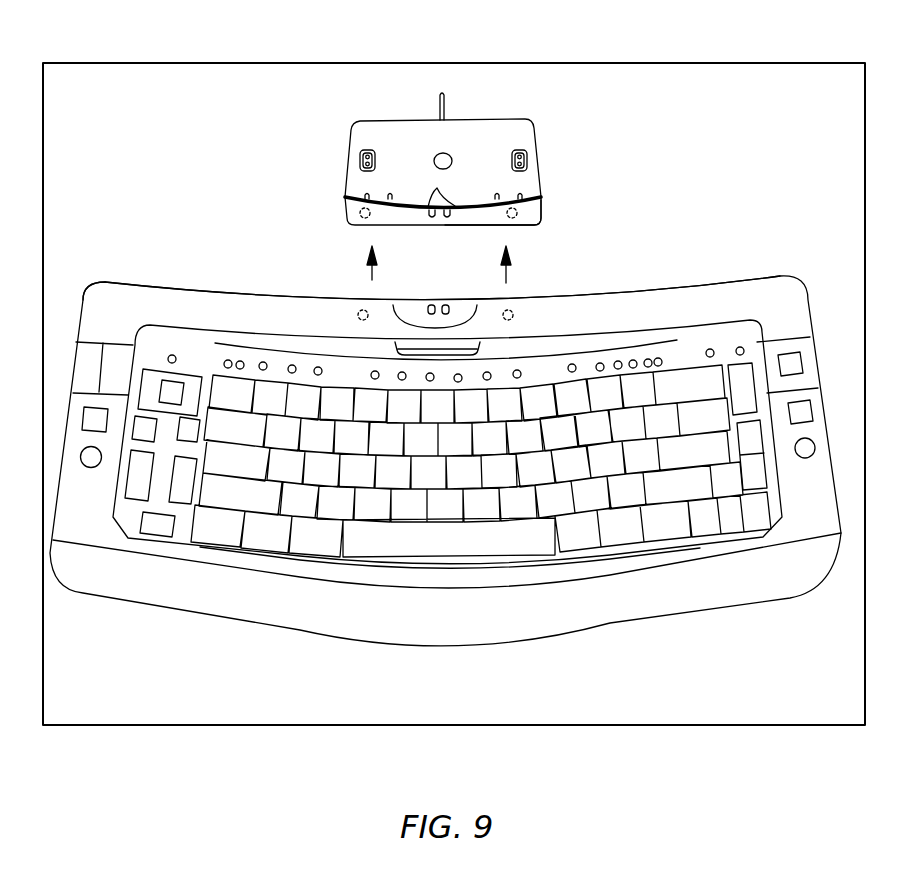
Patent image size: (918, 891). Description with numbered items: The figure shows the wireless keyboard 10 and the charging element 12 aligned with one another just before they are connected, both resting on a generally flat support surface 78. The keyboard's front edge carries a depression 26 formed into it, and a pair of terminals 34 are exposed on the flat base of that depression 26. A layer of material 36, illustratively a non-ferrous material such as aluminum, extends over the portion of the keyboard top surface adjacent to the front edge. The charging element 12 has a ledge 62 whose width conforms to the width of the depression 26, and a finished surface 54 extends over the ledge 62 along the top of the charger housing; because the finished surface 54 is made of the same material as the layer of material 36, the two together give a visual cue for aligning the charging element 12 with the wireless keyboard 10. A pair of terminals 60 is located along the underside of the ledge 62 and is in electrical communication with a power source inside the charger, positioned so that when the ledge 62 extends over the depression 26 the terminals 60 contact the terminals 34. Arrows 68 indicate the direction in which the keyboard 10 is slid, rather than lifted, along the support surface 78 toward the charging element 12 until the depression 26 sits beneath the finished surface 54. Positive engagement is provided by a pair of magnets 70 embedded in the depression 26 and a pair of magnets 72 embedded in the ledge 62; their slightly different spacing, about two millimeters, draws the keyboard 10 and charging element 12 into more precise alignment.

The wireless keyboard 10 is at (226, 627).
The charging element 12 is at (291, 174).
The depression 26 is at (527, 322).
The terminals 34 is at (437, 303).
The layer of material 36 is at (163, 300).
The finished surface 54 is at (344, 212).
The terminals 60 is at (433, 199).
The ledge 62 is at (540, 207).
The arrows 68 is at (506, 283).
The magnets 70 is at (372, 307).
The magnets 72 is at (366, 220).
The support surface 78 is at (673, 112).